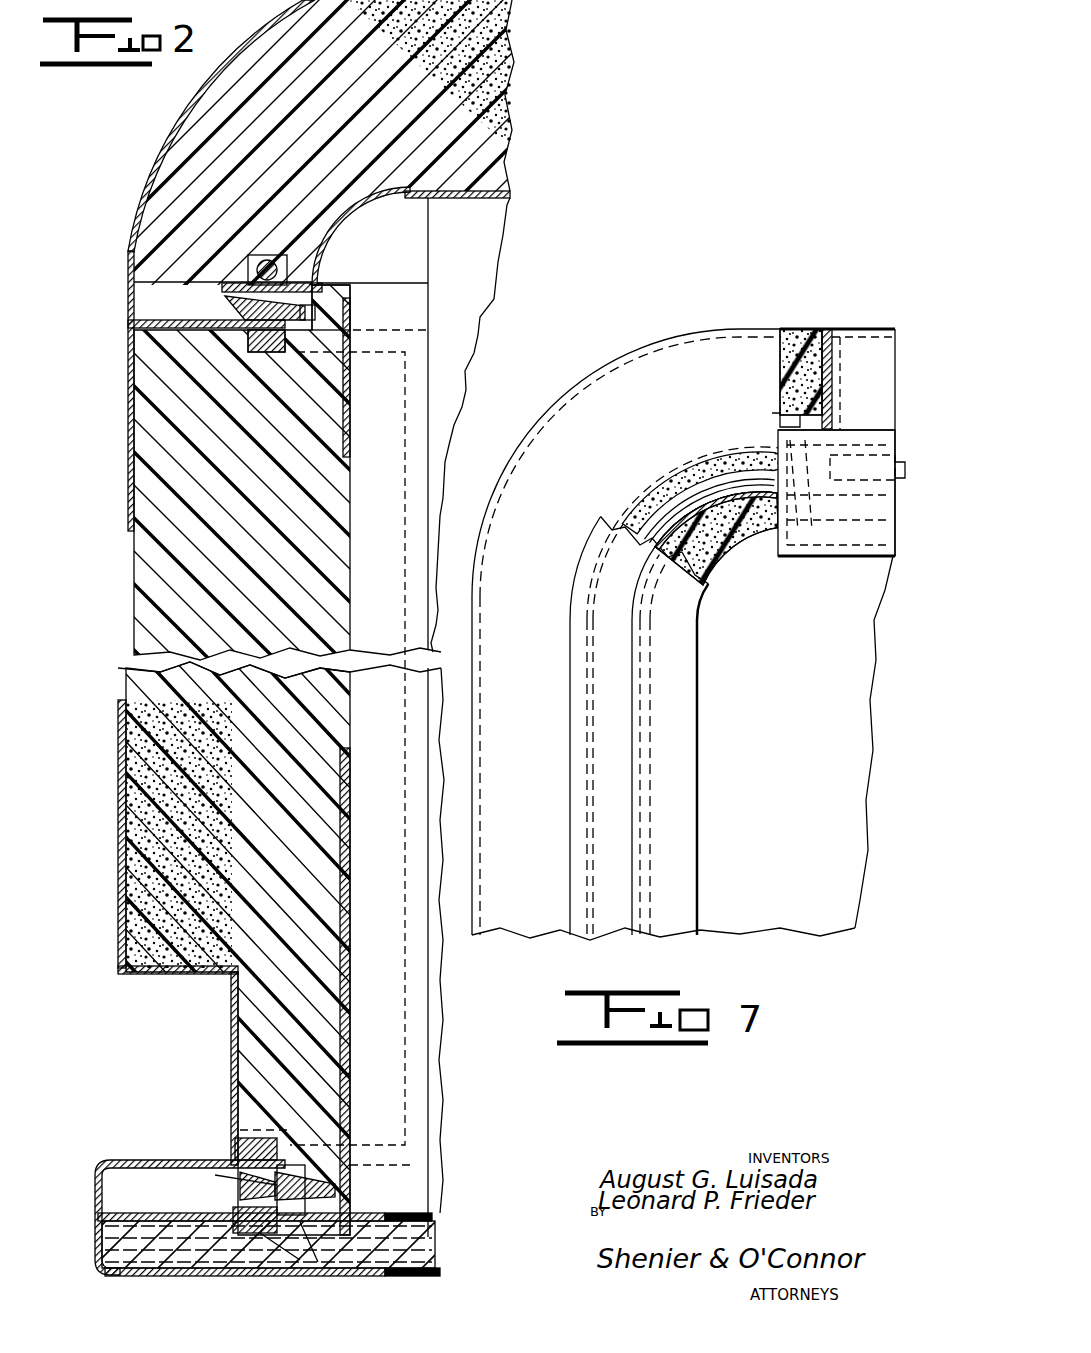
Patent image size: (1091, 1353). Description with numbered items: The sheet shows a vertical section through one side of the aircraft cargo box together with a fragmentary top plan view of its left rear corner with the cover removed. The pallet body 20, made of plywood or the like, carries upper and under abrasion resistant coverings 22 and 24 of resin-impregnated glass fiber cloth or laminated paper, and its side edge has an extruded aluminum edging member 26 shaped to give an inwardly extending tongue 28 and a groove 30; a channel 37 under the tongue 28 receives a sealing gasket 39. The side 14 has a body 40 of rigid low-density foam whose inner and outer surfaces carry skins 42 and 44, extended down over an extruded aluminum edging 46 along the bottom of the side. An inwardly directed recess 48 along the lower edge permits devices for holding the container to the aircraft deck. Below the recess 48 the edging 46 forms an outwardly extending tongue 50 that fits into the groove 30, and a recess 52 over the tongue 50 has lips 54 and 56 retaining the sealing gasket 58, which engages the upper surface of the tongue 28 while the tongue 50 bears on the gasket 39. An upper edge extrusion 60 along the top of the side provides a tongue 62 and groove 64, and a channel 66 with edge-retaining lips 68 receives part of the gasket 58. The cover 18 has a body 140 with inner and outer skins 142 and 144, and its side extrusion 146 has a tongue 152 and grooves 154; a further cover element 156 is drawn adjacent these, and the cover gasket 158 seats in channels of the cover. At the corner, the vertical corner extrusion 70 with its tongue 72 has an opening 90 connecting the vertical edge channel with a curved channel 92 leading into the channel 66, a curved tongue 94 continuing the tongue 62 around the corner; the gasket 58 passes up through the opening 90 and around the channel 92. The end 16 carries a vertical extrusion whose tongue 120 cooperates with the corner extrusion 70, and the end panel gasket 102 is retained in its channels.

In FIG. 2, the side 14 is at (108, 743).
In FIG. 7, the side 14 is at (700, 795).
In FIG. 7, the end 16 is at (836, 556).
In FIG. 2, the cover 18 is at (552, 74).
In FIG. 2, the body 20 is at (436, 1246).
In FIG. 2, the abrasion resistant covering 22 is at (434, 1218).
In FIG. 2, the abrasion resistant covering 24 is at (441, 1272).
In FIG. 2, the edging member 26 is at (95, 1216).
In FIG. 2, the tongue 28 is at (320, 1182).
In FIG. 2, the groove 30 is at (205, 1205).
In FIG. 2, the channel 37 is at (312, 1258).
In FIG. 2, the sealing gasket 39 is at (283, 1245).
In FIG. 2, the body 40 is at (342, 545).
In FIG. 2, the skin 42 is at (112, 690).
In FIG. 2, the skin 44 is at (360, 750).
In FIG. 2, the edging 46 is at (118, 912).
In FIG. 2, the recess 48 is at (124, 976).
In FIG. 2, the tongue 50 is at (252, 1236).
In FIG. 2, the recess 52 is at (275, 1150).
In FIG. 2, the lip 54 is at (252, 1150).
In FIG. 2, the lip 56 is at (278, 1175).
In FIG. 2, the sealing gasket 58 is at (240, 340).
In FIG. 7, the sealing gasket 58 is at (700, 470).
In FIG. 2, the upper edge extrusion 60 is at (348, 404).
In FIG. 7, the upper edge extrusion 60 is at (490, 912).
In FIG. 2, the tongue 62 is at (352, 298).
In FIG. 7, the tongue 62 is at (575, 694).
In FIG. 2, the groove 64 is at (316, 318).
In FIG. 2, the channel 66 is at (350, 358).
In FIG. 7, the channel 66 is at (633, 752).
In FIG. 2, the edge-retaining lip 68 is at (264, 355).
In FIG. 7, the corner extrusion 70 is at (568, 412).
In FIG. 7, the tongue 72 is at (830, 483).
In FIG. 7, the opening 90 is at (770, 450).
In FIG. 7, the curved channel 92 is at (736, 456).
In FIG. 7, the curved tongue 94 is at (585, 565).
In FIG. 7, the end panel gasket 102 is at (862, 430).
In FIG. 7, the tongue 120 is at (798, 326).
In FIG. 2, the body 140 is at (522, 133).
In FIG. 2, the skin 142 is at (361, 147).
In FIG. 2, the skin 144 is at (508, 199).
In FIG. 2, the extrusion 146 is at (160, 133).
In FIG. 2, the tongue 152 is at (128, 318).
In FIG. 2, the groove 154 is at (130, 275).
In FIG. 2, the bolt head 156 is at (266, 253).
In FIG. 2, the cover gasket 158 is at (318, 272).